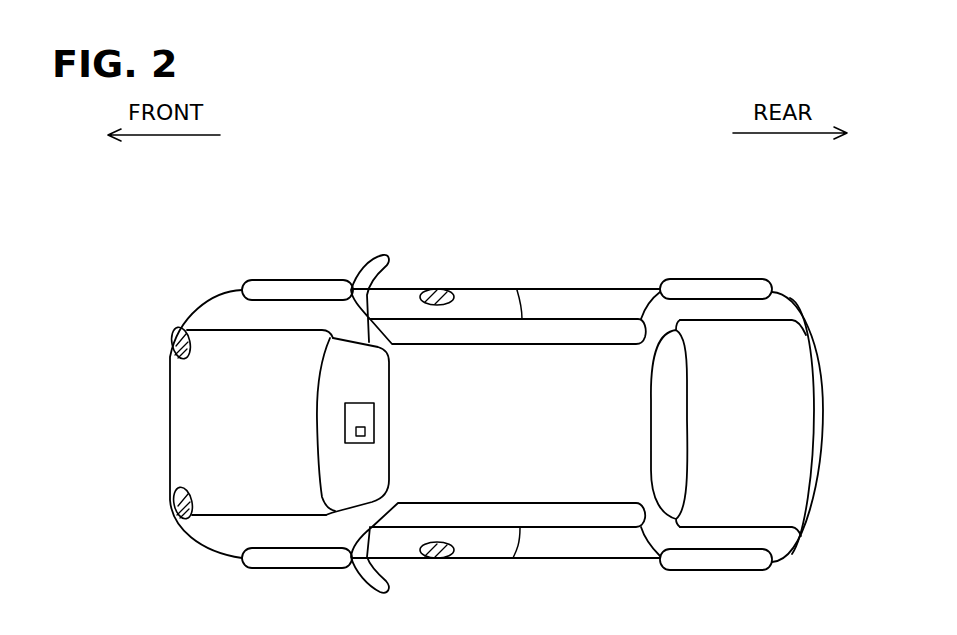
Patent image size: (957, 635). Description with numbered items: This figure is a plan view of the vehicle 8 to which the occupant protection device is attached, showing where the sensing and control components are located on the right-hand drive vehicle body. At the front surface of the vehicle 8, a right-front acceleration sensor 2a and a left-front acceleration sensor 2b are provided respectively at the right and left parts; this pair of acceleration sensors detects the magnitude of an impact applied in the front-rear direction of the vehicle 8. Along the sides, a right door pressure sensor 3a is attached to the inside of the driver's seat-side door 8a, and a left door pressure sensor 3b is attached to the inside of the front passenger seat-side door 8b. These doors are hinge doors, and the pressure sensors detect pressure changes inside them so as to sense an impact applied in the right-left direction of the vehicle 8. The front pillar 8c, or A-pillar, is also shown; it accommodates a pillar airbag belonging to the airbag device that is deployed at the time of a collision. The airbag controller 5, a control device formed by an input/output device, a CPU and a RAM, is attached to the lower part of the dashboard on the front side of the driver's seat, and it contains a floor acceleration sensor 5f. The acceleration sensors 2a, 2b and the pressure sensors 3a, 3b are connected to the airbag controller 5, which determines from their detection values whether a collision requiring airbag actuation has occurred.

The right-front acceleration sensor 2a is at (173, 347).
The left-front acceleration sensor 2b is at (176, 512).
The right door pressure sensor 3a is at (438, 289).
The left door pressure sensor 3b is at (436, 558).
The airbag controller 5 is at (350, 403).
The floor acceleration sensor 5f is at (357, 428).
The vehicle 8 is at (366, 187).
The driver's seat-side door 8a is at (401, 300).
The front passenger seat-side door 8b is at (405, 558).
The front pillar 8c is at (359, 277).